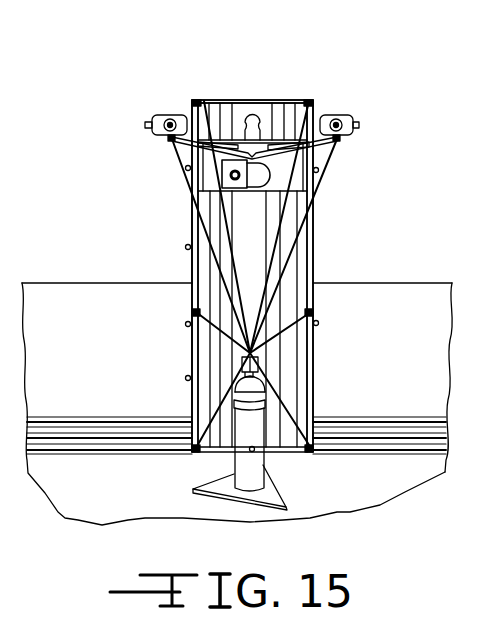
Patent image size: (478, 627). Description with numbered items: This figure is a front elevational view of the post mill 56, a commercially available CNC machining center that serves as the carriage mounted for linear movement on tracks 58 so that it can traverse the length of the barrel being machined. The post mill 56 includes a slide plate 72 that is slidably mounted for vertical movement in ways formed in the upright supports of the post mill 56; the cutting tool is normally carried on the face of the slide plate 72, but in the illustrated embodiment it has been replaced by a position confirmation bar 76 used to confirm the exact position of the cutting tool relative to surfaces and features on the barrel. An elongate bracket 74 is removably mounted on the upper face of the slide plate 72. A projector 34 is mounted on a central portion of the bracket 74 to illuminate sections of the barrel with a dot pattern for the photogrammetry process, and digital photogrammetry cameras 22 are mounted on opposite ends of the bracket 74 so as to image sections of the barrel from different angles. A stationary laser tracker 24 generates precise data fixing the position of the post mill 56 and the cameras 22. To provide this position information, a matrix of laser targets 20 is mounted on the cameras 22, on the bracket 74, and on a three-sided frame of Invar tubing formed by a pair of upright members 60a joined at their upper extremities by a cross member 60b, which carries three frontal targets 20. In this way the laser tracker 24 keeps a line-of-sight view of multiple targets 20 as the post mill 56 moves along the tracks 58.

The laser targets 20 is at (192, 88).
The digital photogrammetry cameras 22 is at (160, 114).
The laser tracker 24 is at (250, 477).
The projector 34 is at (248, 116).
The post mill 56 is at (299, 98).
The tracks 58 is at (66, 461).
The upright members 60a is at (195, 260).
The cross member 60b is at (238, 98).
The slide plate 72 is at (303, 177).
The elongate bracket 74 is at (282, 117).
The position confirmation bar 76 is at (222, 172).